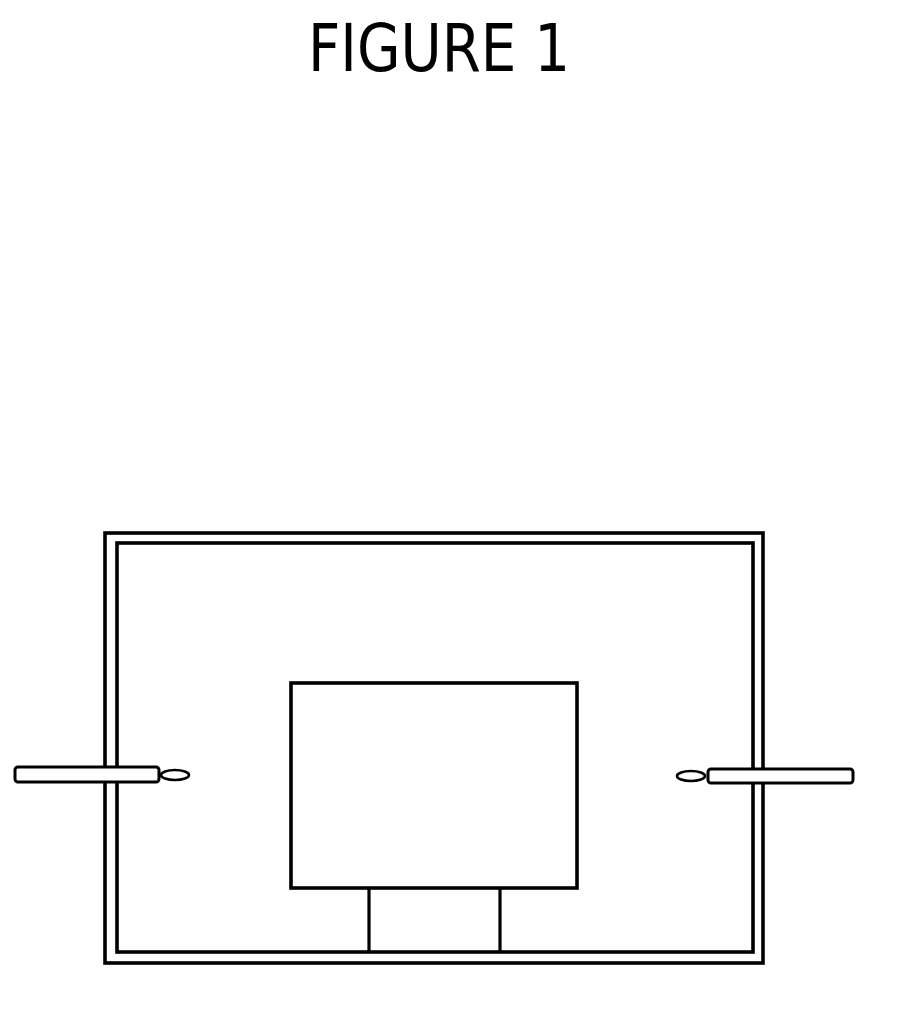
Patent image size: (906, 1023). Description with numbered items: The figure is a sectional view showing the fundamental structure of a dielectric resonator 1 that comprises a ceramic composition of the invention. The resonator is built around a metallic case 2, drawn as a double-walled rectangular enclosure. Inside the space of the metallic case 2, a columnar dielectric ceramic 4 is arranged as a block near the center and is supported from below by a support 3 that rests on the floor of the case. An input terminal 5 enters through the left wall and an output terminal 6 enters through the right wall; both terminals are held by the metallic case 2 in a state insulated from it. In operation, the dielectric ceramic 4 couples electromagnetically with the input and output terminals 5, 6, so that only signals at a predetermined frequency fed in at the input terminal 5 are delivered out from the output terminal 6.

The dielectric resonator 1 is at (235, 445).
The metallic case 2 is at (413, 533).
The support 3 is at (500, 922).
The columnar dielectric ceramic 4 is at (483, 683).
The input terminal 5 is at (176, 769).
The output terminal 6 is at (688, 770).